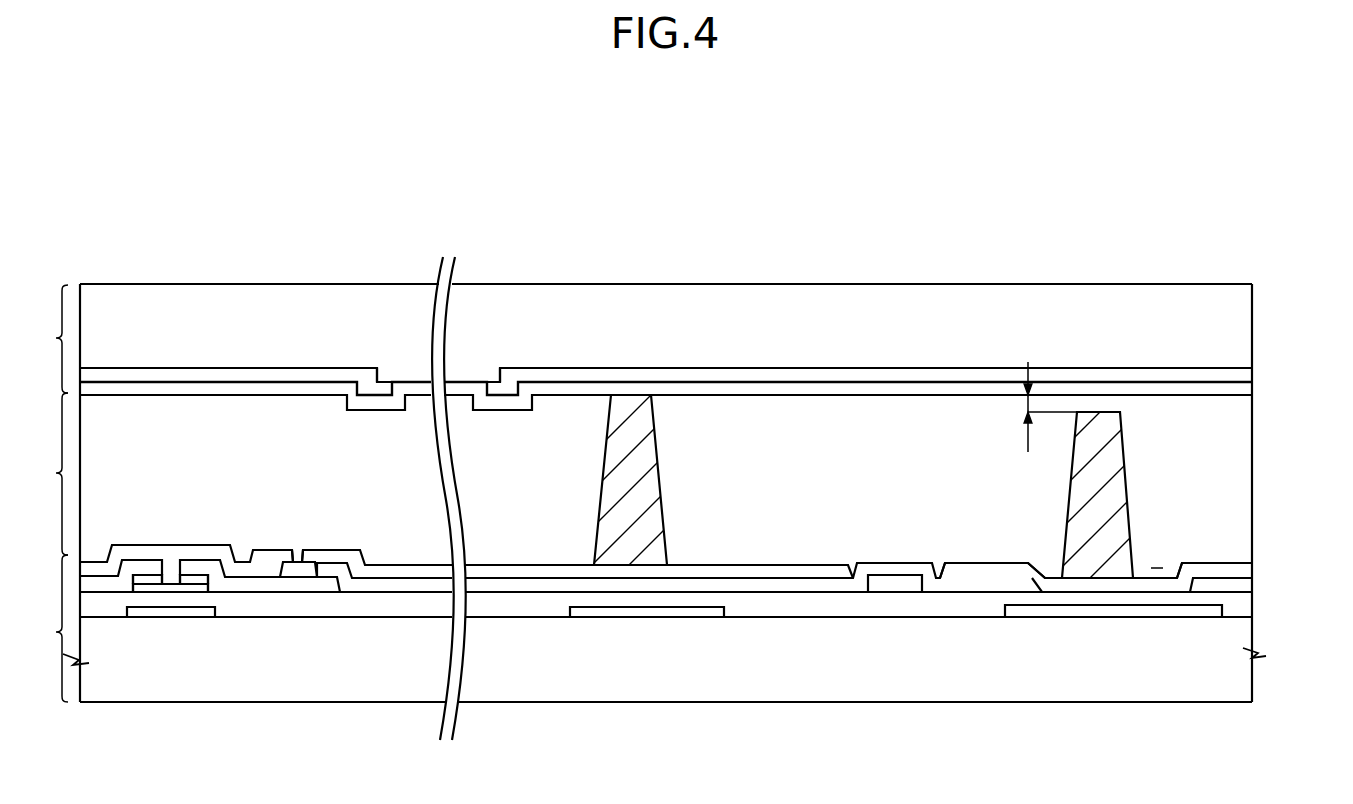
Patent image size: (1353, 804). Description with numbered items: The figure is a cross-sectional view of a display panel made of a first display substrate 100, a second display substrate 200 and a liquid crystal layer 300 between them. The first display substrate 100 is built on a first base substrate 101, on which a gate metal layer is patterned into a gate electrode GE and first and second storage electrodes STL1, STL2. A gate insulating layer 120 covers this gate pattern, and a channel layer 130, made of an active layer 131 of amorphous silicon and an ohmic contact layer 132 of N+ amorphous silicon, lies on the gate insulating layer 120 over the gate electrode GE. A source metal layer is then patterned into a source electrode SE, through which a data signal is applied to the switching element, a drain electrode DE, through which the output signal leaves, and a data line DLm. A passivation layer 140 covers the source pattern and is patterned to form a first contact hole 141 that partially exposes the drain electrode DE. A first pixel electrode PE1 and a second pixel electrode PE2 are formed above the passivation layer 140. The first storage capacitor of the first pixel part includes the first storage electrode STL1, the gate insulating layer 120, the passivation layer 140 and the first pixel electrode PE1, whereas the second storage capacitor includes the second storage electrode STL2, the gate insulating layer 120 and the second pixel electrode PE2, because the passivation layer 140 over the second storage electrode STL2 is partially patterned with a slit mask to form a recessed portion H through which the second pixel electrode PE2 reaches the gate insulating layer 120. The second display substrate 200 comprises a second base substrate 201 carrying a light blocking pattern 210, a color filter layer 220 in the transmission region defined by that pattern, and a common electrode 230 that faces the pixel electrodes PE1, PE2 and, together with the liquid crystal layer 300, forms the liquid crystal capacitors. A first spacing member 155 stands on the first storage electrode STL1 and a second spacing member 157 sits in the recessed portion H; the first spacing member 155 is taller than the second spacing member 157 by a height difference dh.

The second base substrate 201 is at (1243, 322).
The light blocking pattern 210 is at (1250, 373).
The color filter layer 220 is at (468, 375).
The common electrode 230 is at (1243, 388).
The first spacing member 155 is at (648, 440).
The second spacing member 157 is at (1100, 455).
The first contact hole 141 is at (297, 555).
The passivation layer 140 is at (1242, 585).
The gate insulating layer 120 is at (1242, 607).
The first base substrate 101 is at (1243, 645).
The first display substrate 100 is at (39, 628).
The second display substrate 200 is at (39, 339).
The liquid crystal layer 300 is at (39, 474).
The channel layer 130 is at (173, 769).
The active layer 131 is at (188, 592).
The ohmic contact layer 132 is at (198, 580).
The source electrode SE is at (105, 590).
The gate electrode GE is at (150, 614).
The drain electrode DE is at (288, 588).
The first pixel electrode PE1 is at (495, 572).
The second pixel electrode PE2 is at (1212, 568).
The first storage electrode STL1 is at (627, 613).
The second storage electrode STL2 is at (1173, 612).
The data line DLm is at (893, 585).
The recessed portion H is at (1156, 568).
The height difference dh is at (1037, 408).